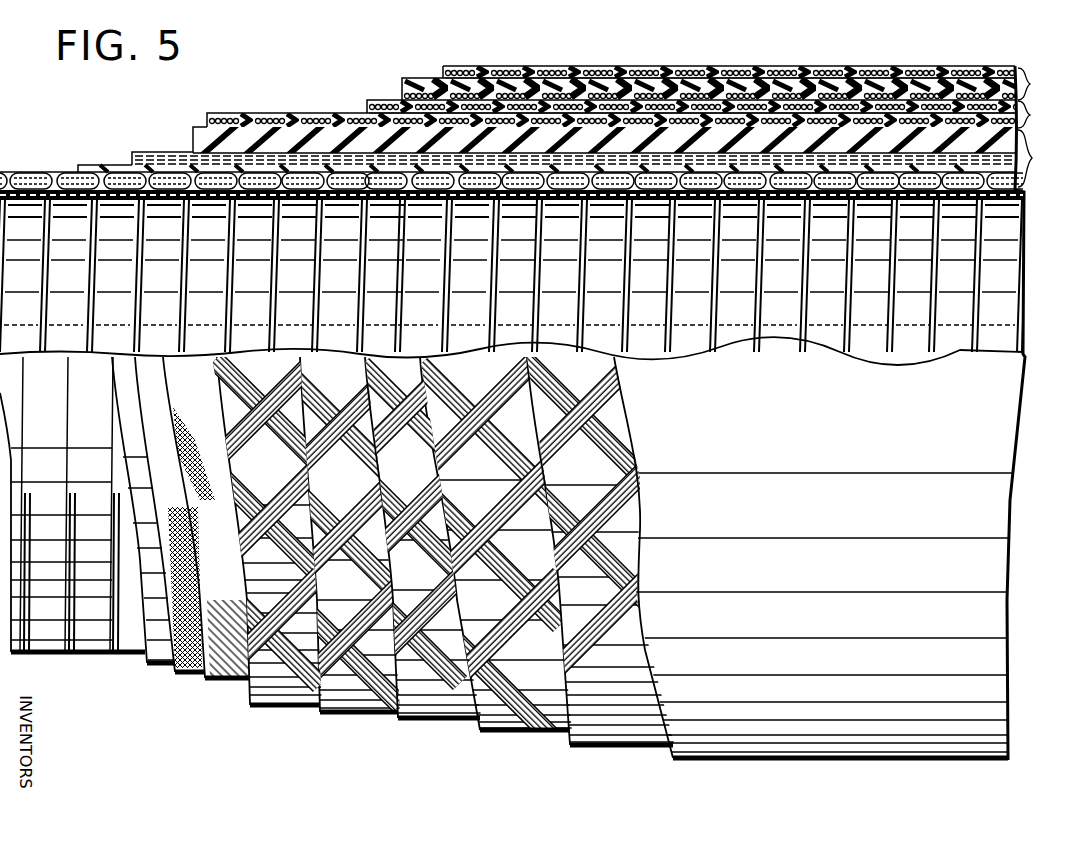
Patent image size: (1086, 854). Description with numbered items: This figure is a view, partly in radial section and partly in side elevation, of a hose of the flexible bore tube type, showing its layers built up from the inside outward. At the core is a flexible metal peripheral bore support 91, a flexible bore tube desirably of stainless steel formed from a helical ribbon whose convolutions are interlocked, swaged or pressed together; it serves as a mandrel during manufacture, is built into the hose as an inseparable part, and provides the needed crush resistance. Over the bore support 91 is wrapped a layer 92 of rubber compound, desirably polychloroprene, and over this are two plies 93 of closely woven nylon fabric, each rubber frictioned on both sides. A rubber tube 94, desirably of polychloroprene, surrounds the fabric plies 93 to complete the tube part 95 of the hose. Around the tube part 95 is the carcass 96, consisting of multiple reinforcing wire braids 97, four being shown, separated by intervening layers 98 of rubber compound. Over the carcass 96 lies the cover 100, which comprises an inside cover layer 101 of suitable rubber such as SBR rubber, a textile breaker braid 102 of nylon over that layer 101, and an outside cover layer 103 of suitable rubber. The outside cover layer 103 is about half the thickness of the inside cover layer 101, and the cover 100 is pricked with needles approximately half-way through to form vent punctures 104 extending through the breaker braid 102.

The flexible metal peripheral bore support 91 is at (40, 172).
The layer of rubber compound 92 is at (95, 162).
The plies of closely woven nylon fabric 93 is at (147, 153).
The rubber tube 94 is at (192, 133).
The tube part 95 is at (602, 158).
The carcass 96 is at (717, 115).
The reinforcing wire braids 97 is at (233, 122).
The intervening layers of rubber compound 98 is at (517, 110).
The cover 100 is at (758, 84).
The inside cover layer 101 is at (601, 87).
The textile breaker braid 102 is at (650, 72).
The outside cover layer 103 is at (730, 72).
The vent punctures 104 is at (867, 72).